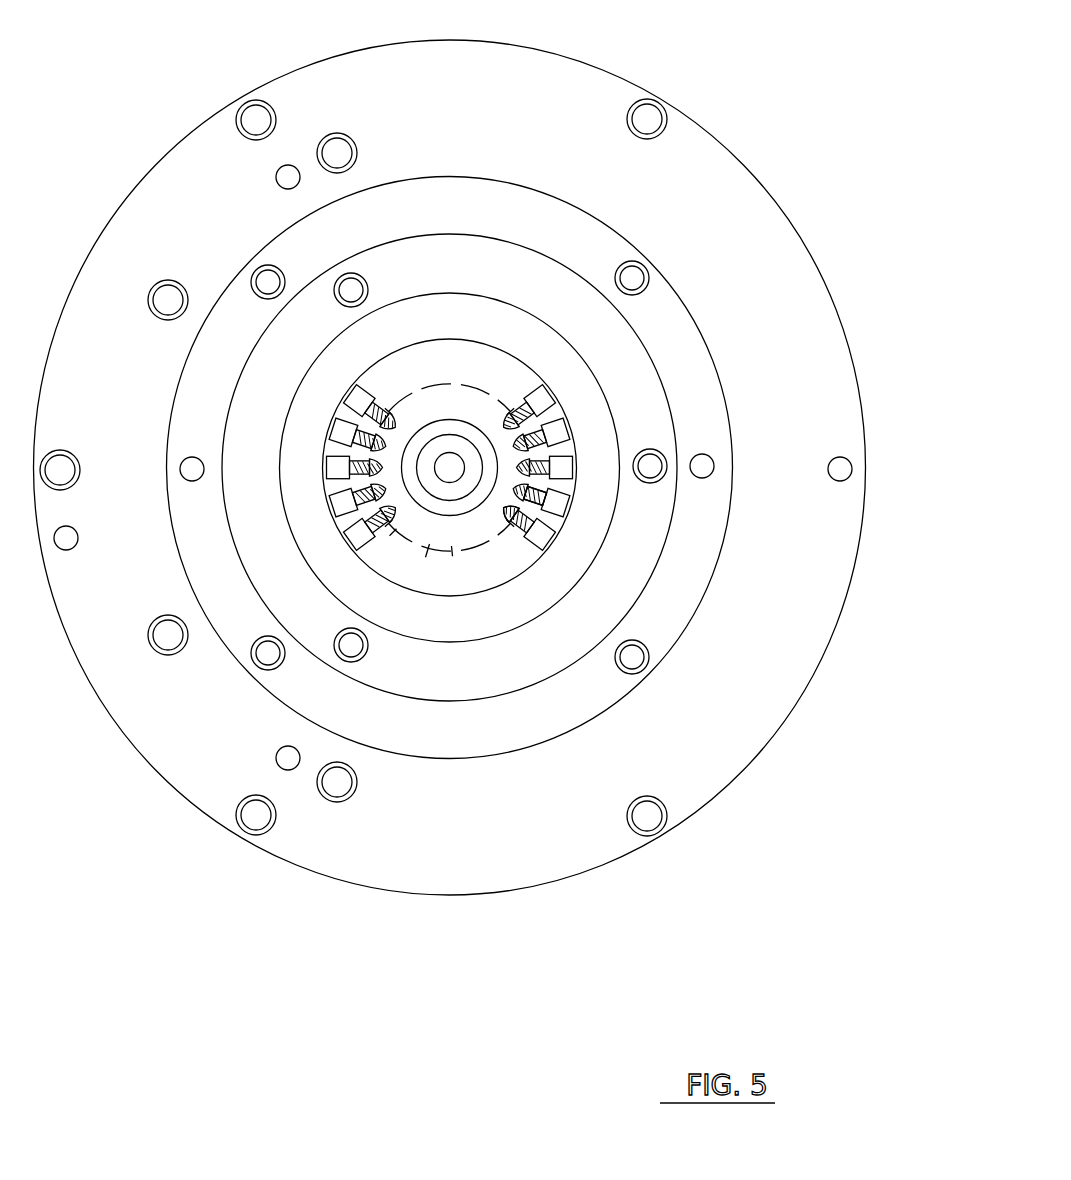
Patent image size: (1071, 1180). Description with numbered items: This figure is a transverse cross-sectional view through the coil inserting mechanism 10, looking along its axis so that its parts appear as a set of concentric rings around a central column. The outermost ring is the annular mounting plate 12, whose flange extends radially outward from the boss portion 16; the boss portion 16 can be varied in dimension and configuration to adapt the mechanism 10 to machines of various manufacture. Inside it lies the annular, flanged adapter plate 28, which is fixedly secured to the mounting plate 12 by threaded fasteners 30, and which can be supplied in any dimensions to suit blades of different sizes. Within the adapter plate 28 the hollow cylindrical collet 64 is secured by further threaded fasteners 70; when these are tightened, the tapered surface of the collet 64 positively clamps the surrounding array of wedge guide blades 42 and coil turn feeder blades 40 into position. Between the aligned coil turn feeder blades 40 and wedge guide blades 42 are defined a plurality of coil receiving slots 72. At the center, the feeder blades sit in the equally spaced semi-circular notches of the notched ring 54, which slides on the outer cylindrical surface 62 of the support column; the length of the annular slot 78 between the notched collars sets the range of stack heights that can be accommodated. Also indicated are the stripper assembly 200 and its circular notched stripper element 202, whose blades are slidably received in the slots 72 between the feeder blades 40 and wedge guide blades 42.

The mechanism 10 is at (249, 917).
The annular mounting plate 12 is at (444, 881).
The boss portion 16 is at (523, 892).
The adapter plate 28 is at (712, 383).
The threaded fasteners 30 is at (637, 278).
The coil turn feeder blades 40 is at (507, 518).
The wedge guide blades 42 is at (548, 408).
The notched ring 54 is at (487, 403).
The outer cylindrical surface 62 is at (443, 417).
The collet 64 is at (640, 358).
The threaded fasteners 70 is at (646, 462).
The coil receiving slots 72 is at (540, 508).
The annular slot 78 is at (427, 533).
The stripper assembly 200 is at (452, 545).
The stripper element 202 is at (397, 530).